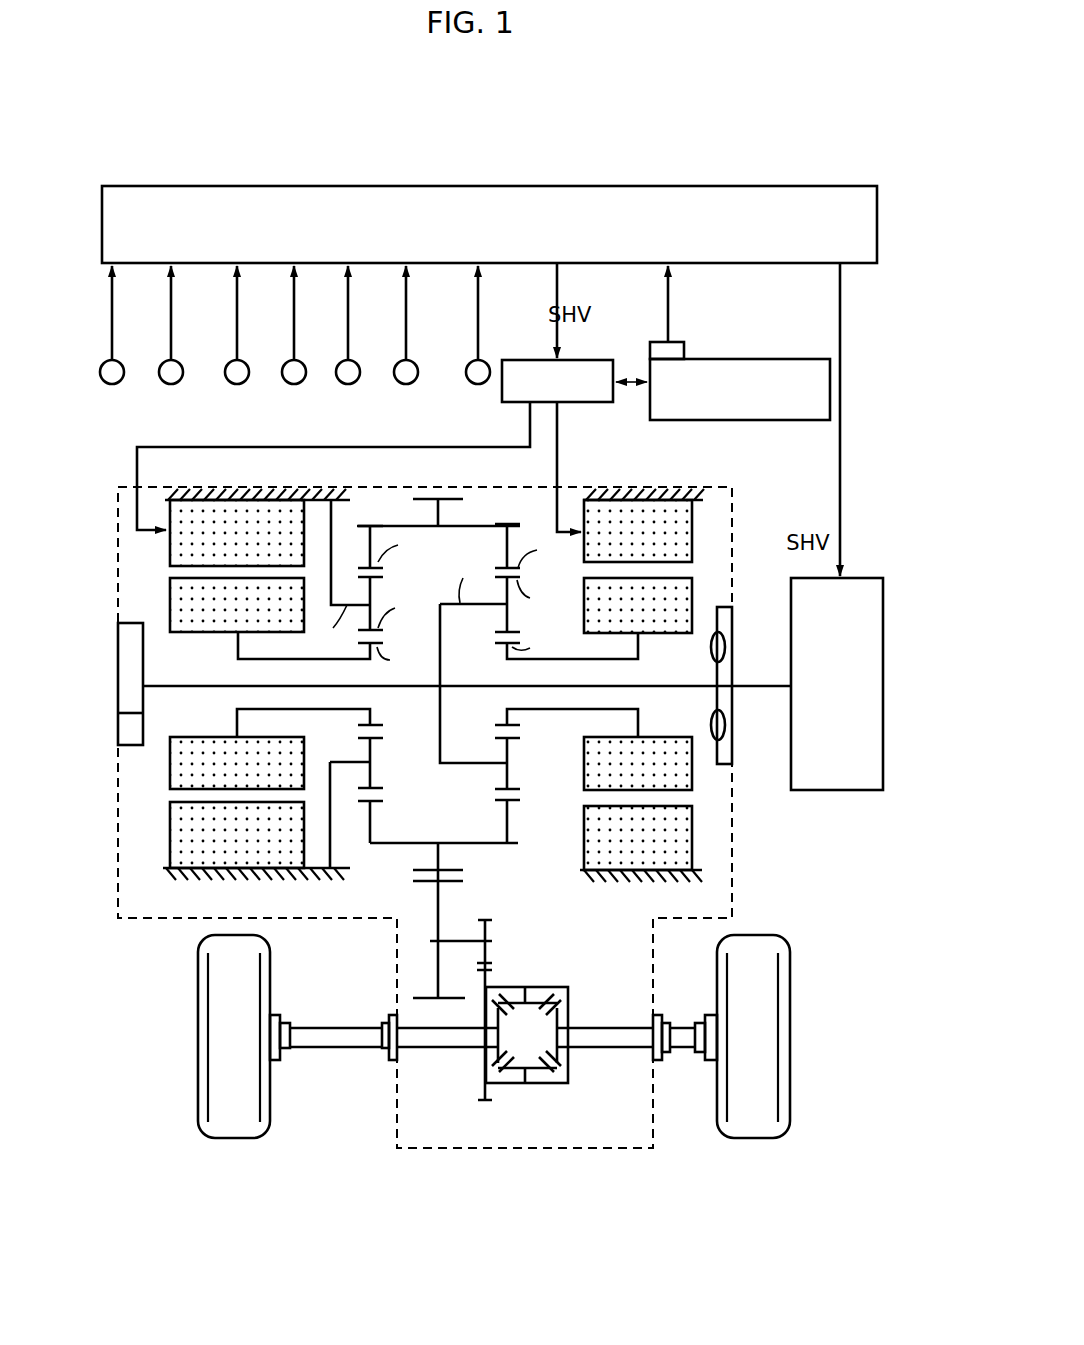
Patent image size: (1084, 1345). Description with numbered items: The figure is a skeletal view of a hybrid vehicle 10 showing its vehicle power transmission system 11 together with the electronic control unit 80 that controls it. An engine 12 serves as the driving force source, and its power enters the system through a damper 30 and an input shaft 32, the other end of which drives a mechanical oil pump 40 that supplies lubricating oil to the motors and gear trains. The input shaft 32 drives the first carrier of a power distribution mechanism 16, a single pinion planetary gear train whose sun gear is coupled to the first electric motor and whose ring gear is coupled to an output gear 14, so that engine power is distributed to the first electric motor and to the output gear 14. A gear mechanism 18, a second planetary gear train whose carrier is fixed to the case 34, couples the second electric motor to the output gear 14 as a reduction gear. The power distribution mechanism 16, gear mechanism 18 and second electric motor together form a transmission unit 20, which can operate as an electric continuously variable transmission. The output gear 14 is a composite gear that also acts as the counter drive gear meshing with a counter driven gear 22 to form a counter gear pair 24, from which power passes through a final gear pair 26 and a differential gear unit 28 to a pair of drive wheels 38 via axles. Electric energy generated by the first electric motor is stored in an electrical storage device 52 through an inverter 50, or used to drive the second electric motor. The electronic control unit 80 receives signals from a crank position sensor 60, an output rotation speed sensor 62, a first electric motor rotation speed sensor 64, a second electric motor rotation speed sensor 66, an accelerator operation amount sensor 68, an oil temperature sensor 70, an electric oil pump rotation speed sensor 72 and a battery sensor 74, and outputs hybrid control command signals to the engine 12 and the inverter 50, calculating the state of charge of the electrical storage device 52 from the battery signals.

The hybrid vehicle 10 is at (718, 145).
The electronic control unit 80 is at (802, 190).
The crank position sensor 60 is at (114, 384).
The output rotation speed sensor 62 is at (173, 384).
The first electric motor rotation speed sensor 64 is at (239, 384).
The second electric motor rotation speed sensor 66 is at (296, 384).
The accelerator operation amount sensor 68 is at (350, 384).
The oil temperature sensor 70 is at (408, 384).
The electric oil pump rotation speed sensor 72 is at (480, 384).
The transmission unit 20 is at (405, 438).
The battery sensor 74 is at (657, 343).
The inverter 50 is at (570, 396).
The electrical storage device 52 is at (678, 420).
The vehicle power transmission system 11 is at (738, 480).
The gear mechanism 18 is at (373, 515).
The output gear 14 is at (427, 497).
The power distribution mechanism 16 is at (510, 515).
The case 34 is at (717, 487).
The mechanical oil pump 40 is at (132, 633).
The input shaft 32 is at (690, 688).
The damper 30 is at (722, 767).
The engine 12 is at (833, 787).
The counter gear pair 24 is at (405, 875).
The counter driven gear 22 is at (452, 882).
The final gear pair 26 is at (501, 961).
The differential gear unit 28 is at (560, 1093).
The drive wheels 38 is at (235, 1133).